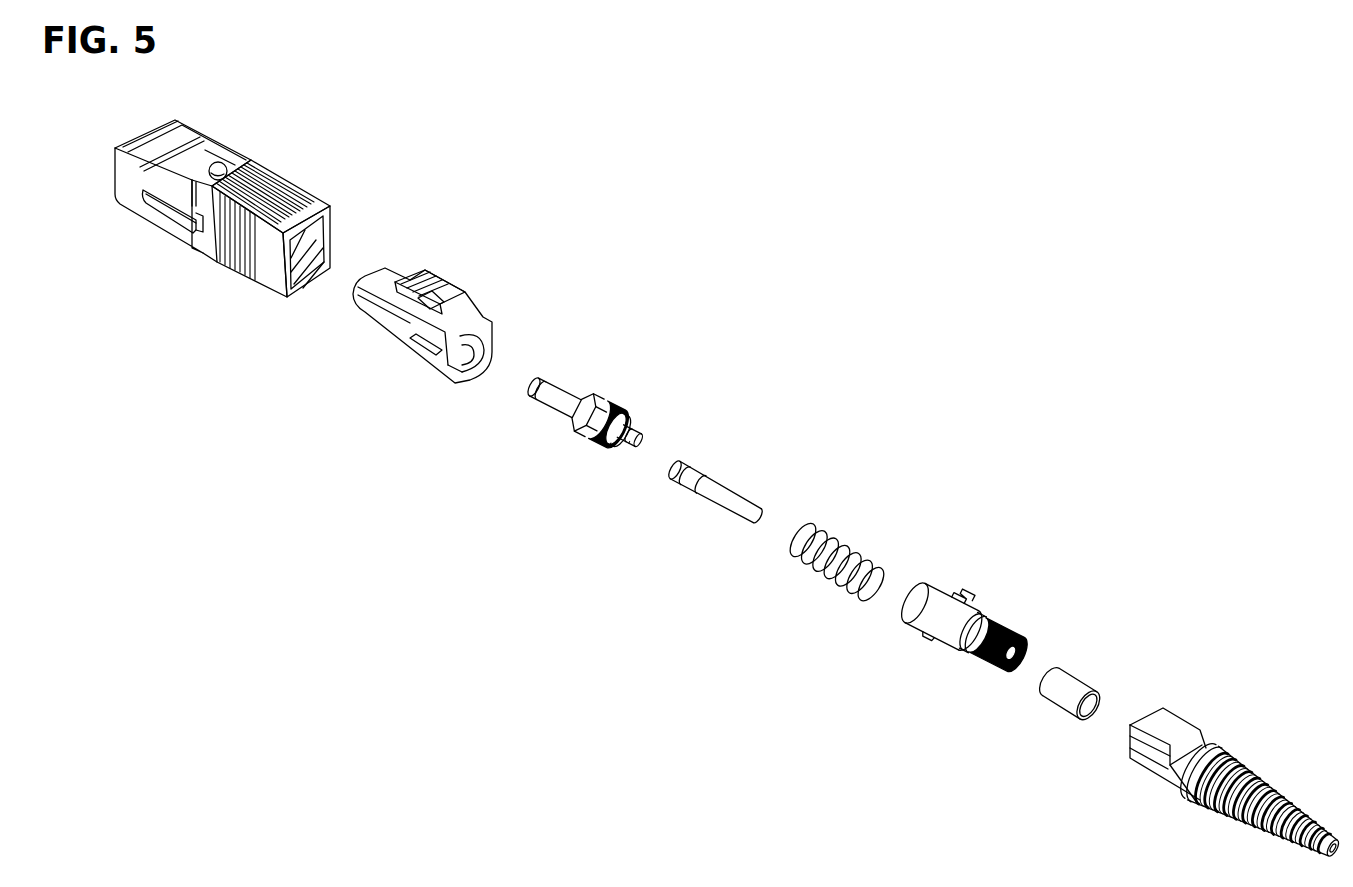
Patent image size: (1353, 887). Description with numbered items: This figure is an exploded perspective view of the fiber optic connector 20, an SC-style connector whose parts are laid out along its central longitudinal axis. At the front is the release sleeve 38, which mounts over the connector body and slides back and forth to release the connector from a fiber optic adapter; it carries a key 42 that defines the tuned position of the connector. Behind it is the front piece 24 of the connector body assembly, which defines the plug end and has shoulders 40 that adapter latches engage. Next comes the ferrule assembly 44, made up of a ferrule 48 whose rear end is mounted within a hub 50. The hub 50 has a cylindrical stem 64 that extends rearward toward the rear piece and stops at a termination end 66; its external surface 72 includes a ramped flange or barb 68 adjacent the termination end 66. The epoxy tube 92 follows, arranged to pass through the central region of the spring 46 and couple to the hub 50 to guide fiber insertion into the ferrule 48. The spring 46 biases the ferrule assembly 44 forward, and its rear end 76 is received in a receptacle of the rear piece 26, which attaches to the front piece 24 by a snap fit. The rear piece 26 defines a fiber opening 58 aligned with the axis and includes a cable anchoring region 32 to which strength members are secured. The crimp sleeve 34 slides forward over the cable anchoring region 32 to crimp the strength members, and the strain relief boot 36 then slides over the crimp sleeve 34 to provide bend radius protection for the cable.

The fiber optic connector 20 is at (832, 295).
The release sleeve 38 is at (205, 219).
The key 42 is at (173, 210).
The front piece 24 is at (430, 320).
The shoulders 40 is at (420, 274).
The ferrule assembly 44 is at (613, 430).
The ferrule 48 is at (543, 396).
The hub 50 is at (607, 403).
The external surface 72 is at (632, 430).
The termination end 66 is at (645, 441).
The stem 64 is at (615, 450).
The barb 68 is at (628, 452).
The epoxy tube 92 is at (728, 488).
The spring 46 is at (823, 537).
The rear end of the spring 76 is at (981, 639).
The rear piece 26 is at (922, 625).
The cable anchoring region 32 is at (1003, 633).
The fiber opening 58 is at (1005, 678).
The crimp sleeve 34 is at (1057, 710).
The strain relief boot 36 is at (1210, 740).